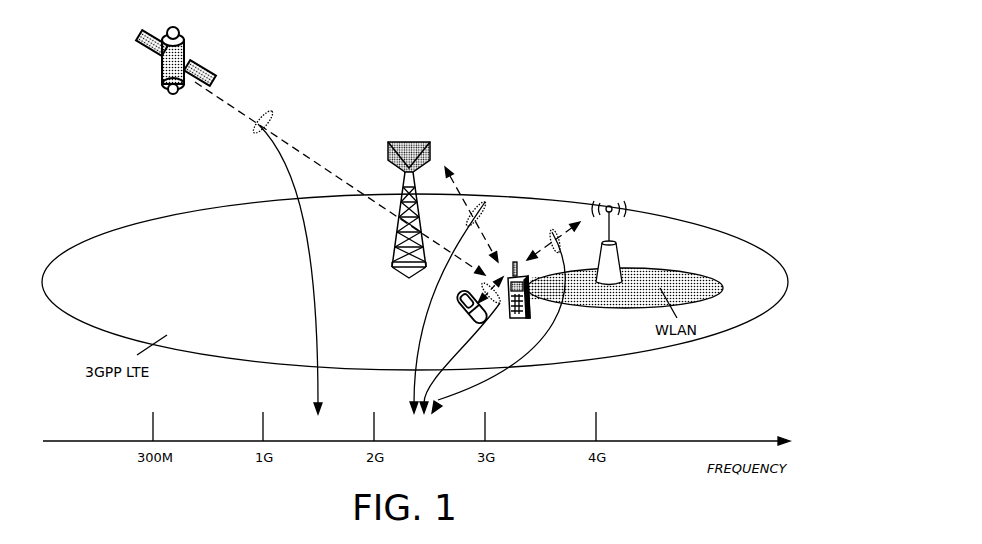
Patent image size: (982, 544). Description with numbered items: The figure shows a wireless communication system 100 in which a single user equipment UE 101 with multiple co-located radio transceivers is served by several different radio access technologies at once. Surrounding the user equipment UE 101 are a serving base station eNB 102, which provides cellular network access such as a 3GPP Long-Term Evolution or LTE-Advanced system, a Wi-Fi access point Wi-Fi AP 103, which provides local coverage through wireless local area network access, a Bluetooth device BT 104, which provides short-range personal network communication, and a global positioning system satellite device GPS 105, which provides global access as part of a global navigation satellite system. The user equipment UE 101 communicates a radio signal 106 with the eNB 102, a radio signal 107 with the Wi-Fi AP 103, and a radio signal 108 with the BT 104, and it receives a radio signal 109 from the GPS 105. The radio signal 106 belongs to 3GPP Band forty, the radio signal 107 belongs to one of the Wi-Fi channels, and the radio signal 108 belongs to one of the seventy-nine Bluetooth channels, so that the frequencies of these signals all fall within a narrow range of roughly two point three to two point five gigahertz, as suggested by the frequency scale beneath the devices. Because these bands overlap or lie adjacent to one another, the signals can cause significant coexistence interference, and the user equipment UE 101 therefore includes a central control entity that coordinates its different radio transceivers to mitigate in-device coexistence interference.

The wireless communication system 100 is at (737, 49).
The user equipment 101 is at (516, 320).
The serving base station eNB 102 is at (406, 140).
The Wi-Fi access point 103 is at (608, 206).
The Bluetooth device 104 is at (460, 312).
The global positioning system satellite device 105 is at (172, 93).
The radio signal 106 is at (480, 207).
The radio signal 107 is at (552, 230).
The radio signal 108 is at (482, 284).
The radio signal 109 is at (266, 112).